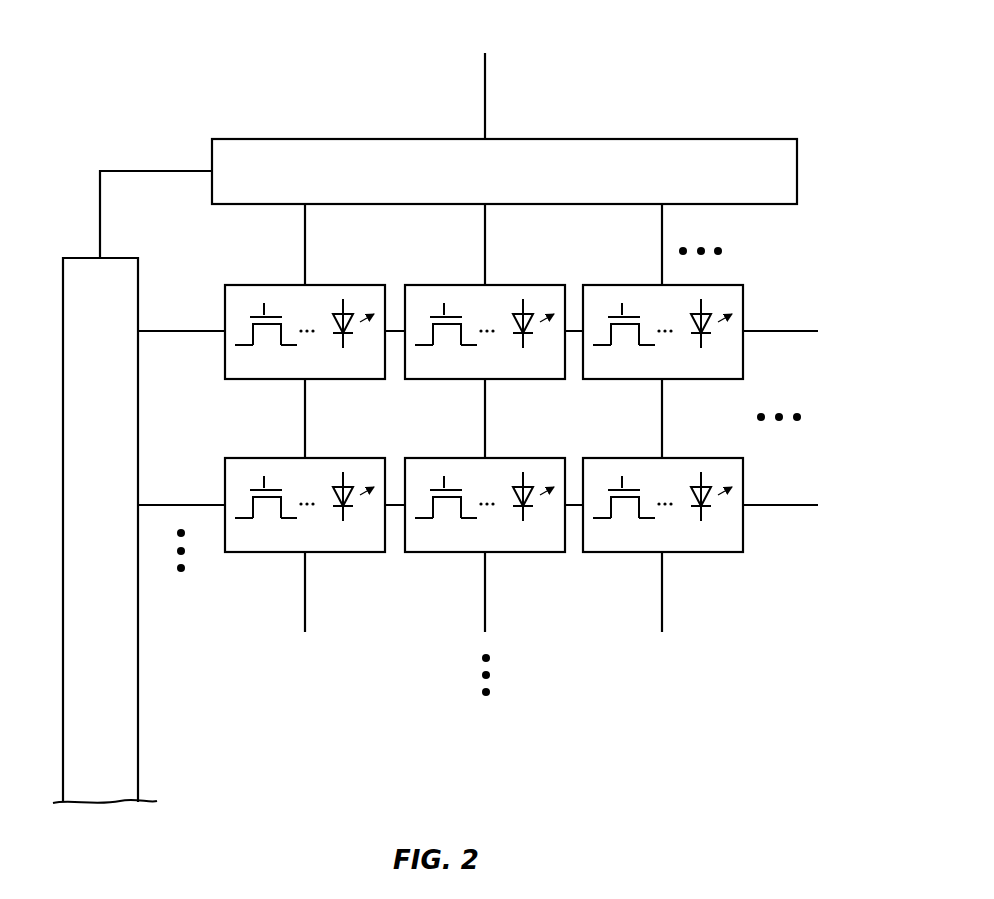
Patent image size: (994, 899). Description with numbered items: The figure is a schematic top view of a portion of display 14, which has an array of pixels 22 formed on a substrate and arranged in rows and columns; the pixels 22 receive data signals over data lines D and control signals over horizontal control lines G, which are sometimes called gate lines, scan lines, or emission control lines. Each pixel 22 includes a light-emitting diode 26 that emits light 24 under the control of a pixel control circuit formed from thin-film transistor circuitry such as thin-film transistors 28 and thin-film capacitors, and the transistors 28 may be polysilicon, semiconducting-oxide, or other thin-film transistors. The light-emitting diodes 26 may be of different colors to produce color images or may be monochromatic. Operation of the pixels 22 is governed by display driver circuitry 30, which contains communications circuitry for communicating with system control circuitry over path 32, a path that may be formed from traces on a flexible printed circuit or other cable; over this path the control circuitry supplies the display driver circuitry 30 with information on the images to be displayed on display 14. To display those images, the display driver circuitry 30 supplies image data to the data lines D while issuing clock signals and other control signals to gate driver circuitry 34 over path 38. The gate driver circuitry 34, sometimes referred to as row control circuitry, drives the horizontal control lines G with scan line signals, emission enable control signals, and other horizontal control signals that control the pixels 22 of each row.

The display 14 is at (435, 403).
The pixel 22 is at (664, 493).
The light 24 is at (720, 497).
The light-emitting diode 26 is at (703, 532).
The thin-film transistor 28 is at (628, 530).
The display driver circuitry 30 is at (270, 152).
The path 32 is at (486, 72).
The gate driver circuitry 34 is at (128, 763).
The path 38 is at (158, 171).